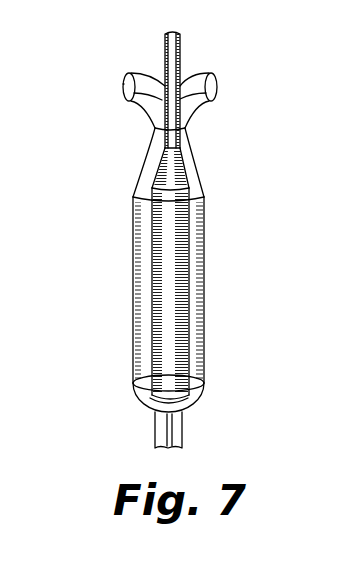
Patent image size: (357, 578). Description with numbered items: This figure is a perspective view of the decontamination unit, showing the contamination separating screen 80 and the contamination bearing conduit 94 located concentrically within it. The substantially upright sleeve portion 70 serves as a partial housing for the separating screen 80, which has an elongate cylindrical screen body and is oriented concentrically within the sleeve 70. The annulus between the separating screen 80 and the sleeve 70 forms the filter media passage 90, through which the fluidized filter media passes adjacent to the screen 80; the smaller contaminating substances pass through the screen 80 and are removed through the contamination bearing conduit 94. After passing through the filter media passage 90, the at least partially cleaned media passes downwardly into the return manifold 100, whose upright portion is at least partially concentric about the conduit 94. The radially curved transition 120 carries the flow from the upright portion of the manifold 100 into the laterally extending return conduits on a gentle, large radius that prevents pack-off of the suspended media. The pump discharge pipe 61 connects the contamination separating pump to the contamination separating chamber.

The return manifold 100 is at (103, 115).
The contamination bearing conduit 94 is at (180, 53).
The radially curved transition 120 is at (193, 110).
The upright sleeve portion 70 is at (201, 183).
The contamination separating screen 80 is at (187, 218).
The filter media passage 90 is at (192, 266).
The pump discharge pipe 61 is at (184, 431).